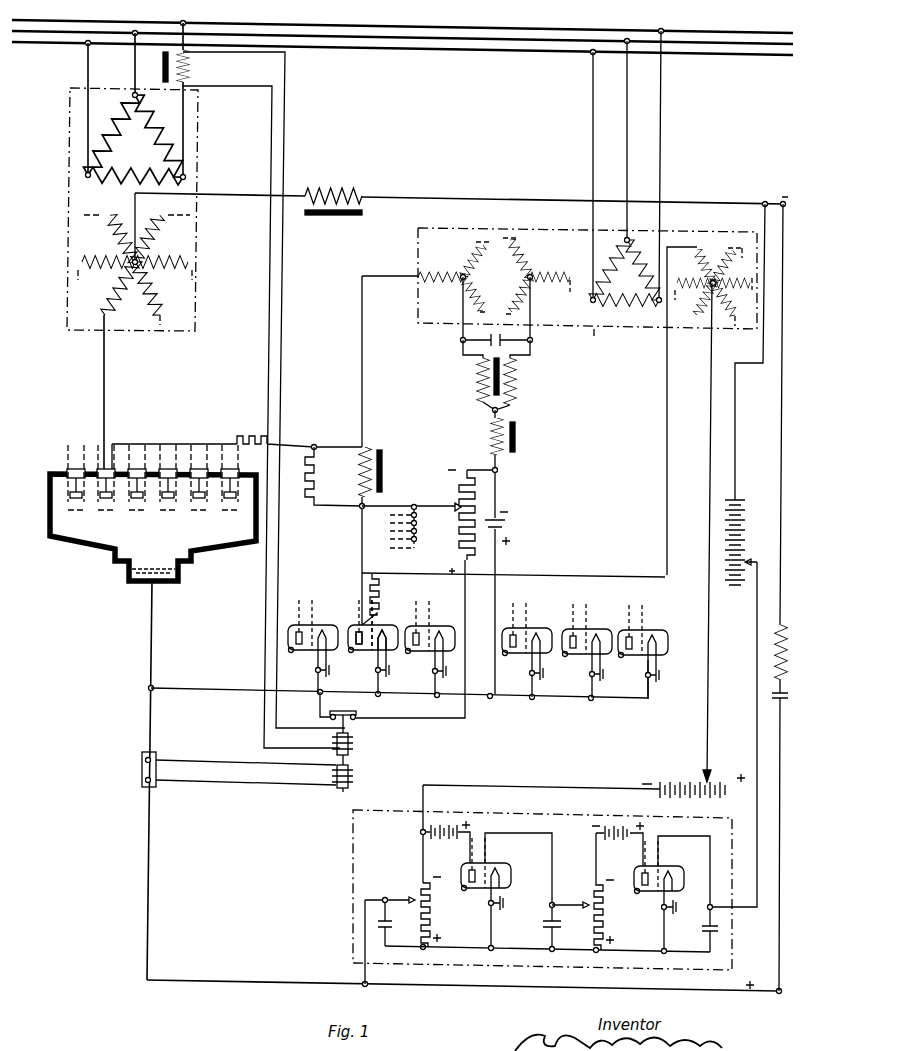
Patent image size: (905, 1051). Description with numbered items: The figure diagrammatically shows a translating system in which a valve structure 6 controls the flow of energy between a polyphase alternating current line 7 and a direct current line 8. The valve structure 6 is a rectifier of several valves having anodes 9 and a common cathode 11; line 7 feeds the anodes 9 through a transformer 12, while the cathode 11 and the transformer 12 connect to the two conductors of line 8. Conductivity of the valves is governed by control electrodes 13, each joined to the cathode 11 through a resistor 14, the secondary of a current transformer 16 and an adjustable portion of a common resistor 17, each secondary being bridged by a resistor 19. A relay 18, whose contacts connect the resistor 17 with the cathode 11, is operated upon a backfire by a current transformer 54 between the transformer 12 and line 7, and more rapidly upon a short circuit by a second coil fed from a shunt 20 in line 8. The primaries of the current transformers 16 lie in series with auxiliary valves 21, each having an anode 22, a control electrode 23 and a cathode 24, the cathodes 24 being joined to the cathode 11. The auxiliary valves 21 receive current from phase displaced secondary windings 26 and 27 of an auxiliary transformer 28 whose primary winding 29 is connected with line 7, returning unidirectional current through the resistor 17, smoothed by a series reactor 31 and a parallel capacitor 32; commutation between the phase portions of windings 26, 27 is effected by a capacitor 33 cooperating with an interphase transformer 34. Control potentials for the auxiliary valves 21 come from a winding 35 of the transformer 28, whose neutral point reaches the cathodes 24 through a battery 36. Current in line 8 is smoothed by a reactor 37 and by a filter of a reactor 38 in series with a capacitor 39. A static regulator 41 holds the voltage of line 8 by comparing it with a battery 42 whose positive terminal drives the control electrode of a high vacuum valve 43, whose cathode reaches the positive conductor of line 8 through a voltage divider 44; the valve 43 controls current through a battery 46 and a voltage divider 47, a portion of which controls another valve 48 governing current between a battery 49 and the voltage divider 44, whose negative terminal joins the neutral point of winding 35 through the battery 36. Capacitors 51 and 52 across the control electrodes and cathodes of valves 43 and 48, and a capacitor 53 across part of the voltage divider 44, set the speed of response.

The valve structure 6 is at (222, 546).
The line 7 is at (478, 30).
The line 8 is at (714, 204).
The anodes 9 is at (99, 497).
The cathode structure 11 is at (147, 585).
The transformer 12 is at (90, 330).
The control electrodes 13 is at (108, 510).
The resistor 14 is at (250, 443).
The current transformer 16 is at (390, 462).
The resistor 17 is at (458, 541).
The relay 18 is at (349, 748).
The resistor 19 is at (319, 491).
The shunt 20 is at (141, 768).
The auxiliary valves 21 is at (386, 626).
The anode 22 is at (357, 628).
The control electrode 23 is at (372, 651).
The cathode 24 is at (392, 652).
The secondary winding 26 is at (470, 270).
The secondary winding 27 is at (536, 270).
The auxiliary transformer 28 is at (589, 341).
The primary winding 29 is at (648, 305).
The reactor 31 is at (516, 444).
The capacitor 32 is at (508, 526).
The capacitor 33 is at (490, 341).
The interphase transformer 34 is at (482, 404).
The winding 35 is at (700, 320).
The battery 36 is at (696, 778).
The reactor 37 is at (330, 190).
The reactor 38 is at (770, 651).
The capacitor 39 is at (770, 699).
The static regulator 41 is at (353, 847).
The battery 42 is at (745, 541).
The valve 43 is at (680, 877).
The voltage divider 44 is at (432, 925).
The battery 46 is at (612, 841).
The voltage divider 47 is at (603, 925).
The valve 48 is at (512, 876).
The battery 49 is at (444, 840).
The capacitor 51 is at (708, 929).
The capacitor 52 is at (548, 926).
The capacitor 53 is at (392, 931).
The current transformer 54 is at (165, 80).